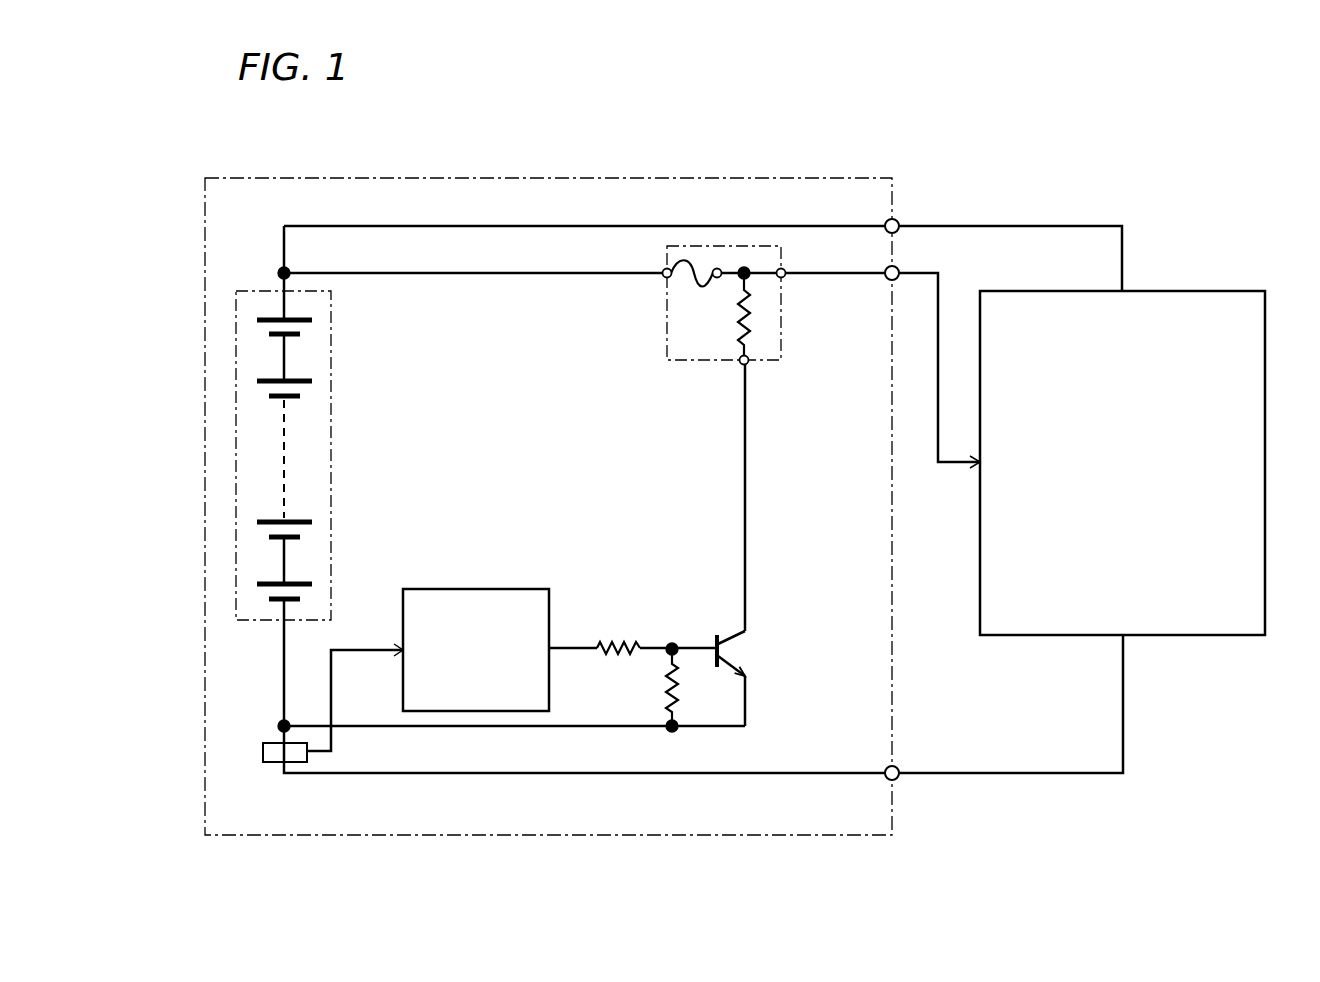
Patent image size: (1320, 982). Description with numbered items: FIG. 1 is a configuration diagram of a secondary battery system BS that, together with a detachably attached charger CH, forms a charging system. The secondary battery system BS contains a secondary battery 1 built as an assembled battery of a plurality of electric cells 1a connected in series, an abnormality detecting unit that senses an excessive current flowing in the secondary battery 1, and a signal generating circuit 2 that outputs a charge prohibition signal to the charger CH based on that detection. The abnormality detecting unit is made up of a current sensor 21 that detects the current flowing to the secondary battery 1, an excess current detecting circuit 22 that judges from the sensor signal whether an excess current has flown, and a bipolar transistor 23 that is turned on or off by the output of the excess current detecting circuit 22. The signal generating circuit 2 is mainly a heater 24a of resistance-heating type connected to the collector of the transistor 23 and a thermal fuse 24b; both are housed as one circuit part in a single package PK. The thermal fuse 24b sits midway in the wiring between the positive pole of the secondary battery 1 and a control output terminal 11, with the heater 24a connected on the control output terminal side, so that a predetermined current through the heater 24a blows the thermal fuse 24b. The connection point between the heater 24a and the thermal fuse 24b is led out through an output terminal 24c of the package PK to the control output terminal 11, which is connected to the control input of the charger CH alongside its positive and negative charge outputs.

The secondary battery 1 is at (331, 300).
The electric cell 1a is at (300, 334).
The signal generating circuit 2 is at (597, 393).
The control output terminal 11 is at (888, 281).
The current sensor 21 is at (272, 763).
The excess current detecting circuit 22 is at (475, 589).
The bipolar transistor 23 is at (735, 634).
The heater 24a is at (753, 328).
The thermal fuse 24b is at (700, 283).
The output terminal 24c is at (781, 262).
The package PK is at (685, 362).
The secondary battery system BS is at (468, 178).
The charger CH is at (1182, 291).